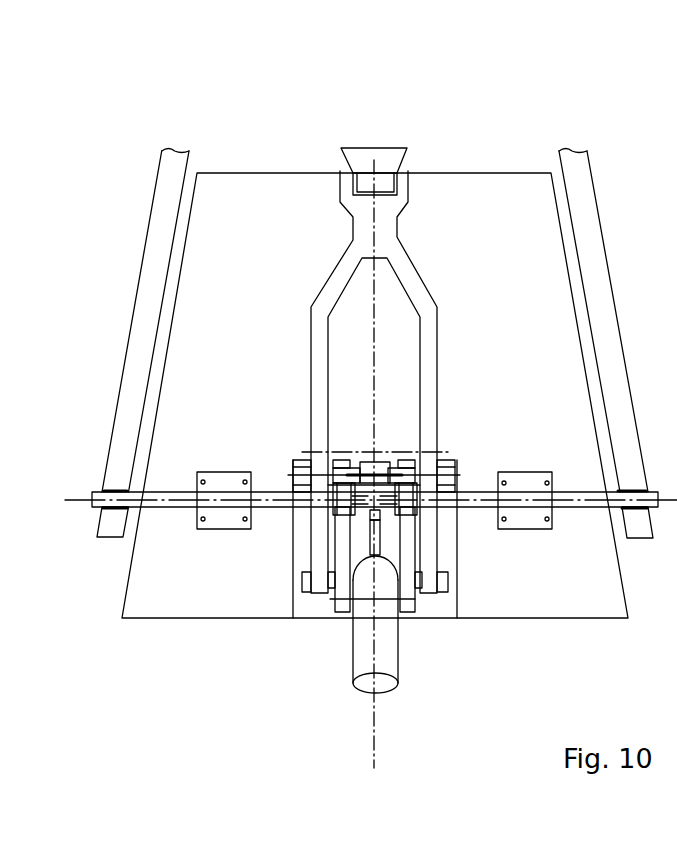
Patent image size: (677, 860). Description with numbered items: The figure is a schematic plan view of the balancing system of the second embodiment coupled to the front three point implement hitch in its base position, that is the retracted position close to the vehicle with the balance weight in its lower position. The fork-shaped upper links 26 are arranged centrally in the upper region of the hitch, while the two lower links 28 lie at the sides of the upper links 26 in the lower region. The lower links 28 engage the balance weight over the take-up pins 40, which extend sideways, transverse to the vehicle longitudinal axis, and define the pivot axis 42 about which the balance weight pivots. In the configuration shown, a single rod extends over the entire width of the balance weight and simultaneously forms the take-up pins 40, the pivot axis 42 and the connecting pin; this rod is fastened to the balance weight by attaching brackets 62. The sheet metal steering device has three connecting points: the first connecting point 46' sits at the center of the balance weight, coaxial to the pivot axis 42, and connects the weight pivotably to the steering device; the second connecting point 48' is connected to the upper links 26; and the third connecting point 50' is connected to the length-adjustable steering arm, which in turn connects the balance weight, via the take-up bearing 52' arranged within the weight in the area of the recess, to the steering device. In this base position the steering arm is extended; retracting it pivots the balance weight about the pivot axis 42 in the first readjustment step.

The upper links 26 is at (405, 272).
The lower links 28 is at (160, 240).
The take-up pins 40 is at (138, 498).
The pivot axis 42 is at (98, 497).
The first connecting point 46' is at (441, 584).
The second connecting point 48' is at (409, 596).
The third connecting point 50' is at (398, 623).
The take-up bearing 52' is at (434, 396).
The attaching brackets 62 is at (221, 481).